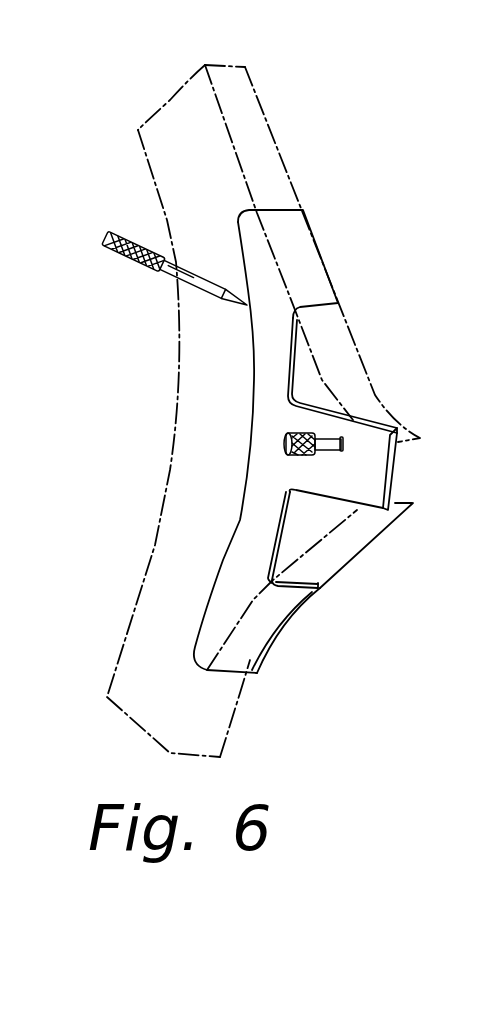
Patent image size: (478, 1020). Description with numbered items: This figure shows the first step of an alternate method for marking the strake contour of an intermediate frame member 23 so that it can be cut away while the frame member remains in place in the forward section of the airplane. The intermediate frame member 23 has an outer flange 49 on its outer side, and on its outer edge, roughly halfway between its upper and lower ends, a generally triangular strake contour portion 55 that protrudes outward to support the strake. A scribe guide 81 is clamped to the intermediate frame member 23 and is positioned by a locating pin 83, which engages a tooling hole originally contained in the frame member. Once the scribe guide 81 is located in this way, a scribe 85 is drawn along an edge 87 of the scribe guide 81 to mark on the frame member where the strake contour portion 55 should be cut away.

The intermediate frame member 23 is at (252, 82).
The outer flange 49 is at (257, 127).
The strake contour portion 55 is at (350, 365).
The scribe guide 81 is at (225, 595).
The locating pin 83 is at (283, 448).
The scribe 85 is at (112, 227).
The edge 87 is at (283, 212).